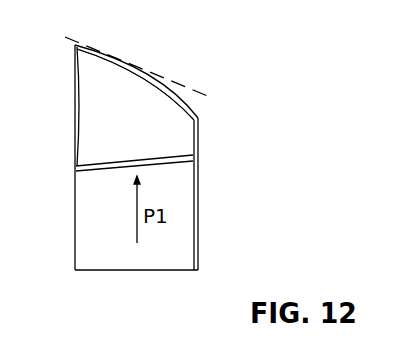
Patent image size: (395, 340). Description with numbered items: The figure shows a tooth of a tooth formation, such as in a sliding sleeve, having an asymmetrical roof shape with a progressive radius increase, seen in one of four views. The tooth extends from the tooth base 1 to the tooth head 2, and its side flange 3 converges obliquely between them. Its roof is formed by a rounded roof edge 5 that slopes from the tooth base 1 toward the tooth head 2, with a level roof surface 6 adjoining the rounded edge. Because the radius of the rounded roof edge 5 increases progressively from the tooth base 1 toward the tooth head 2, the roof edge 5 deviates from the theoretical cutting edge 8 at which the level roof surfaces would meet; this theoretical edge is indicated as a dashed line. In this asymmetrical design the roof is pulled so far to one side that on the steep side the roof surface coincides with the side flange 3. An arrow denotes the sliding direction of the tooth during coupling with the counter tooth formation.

The tooth base 1 is at (75, 212).
The tooth head 2 is at (199, 202).
The side flange 3 is at (157, 243).
The roof edge 5 is at (149, 75).
The roof surface 6 is at (118, 110).
The theoretical cutting edge 8 is at (192, 85).